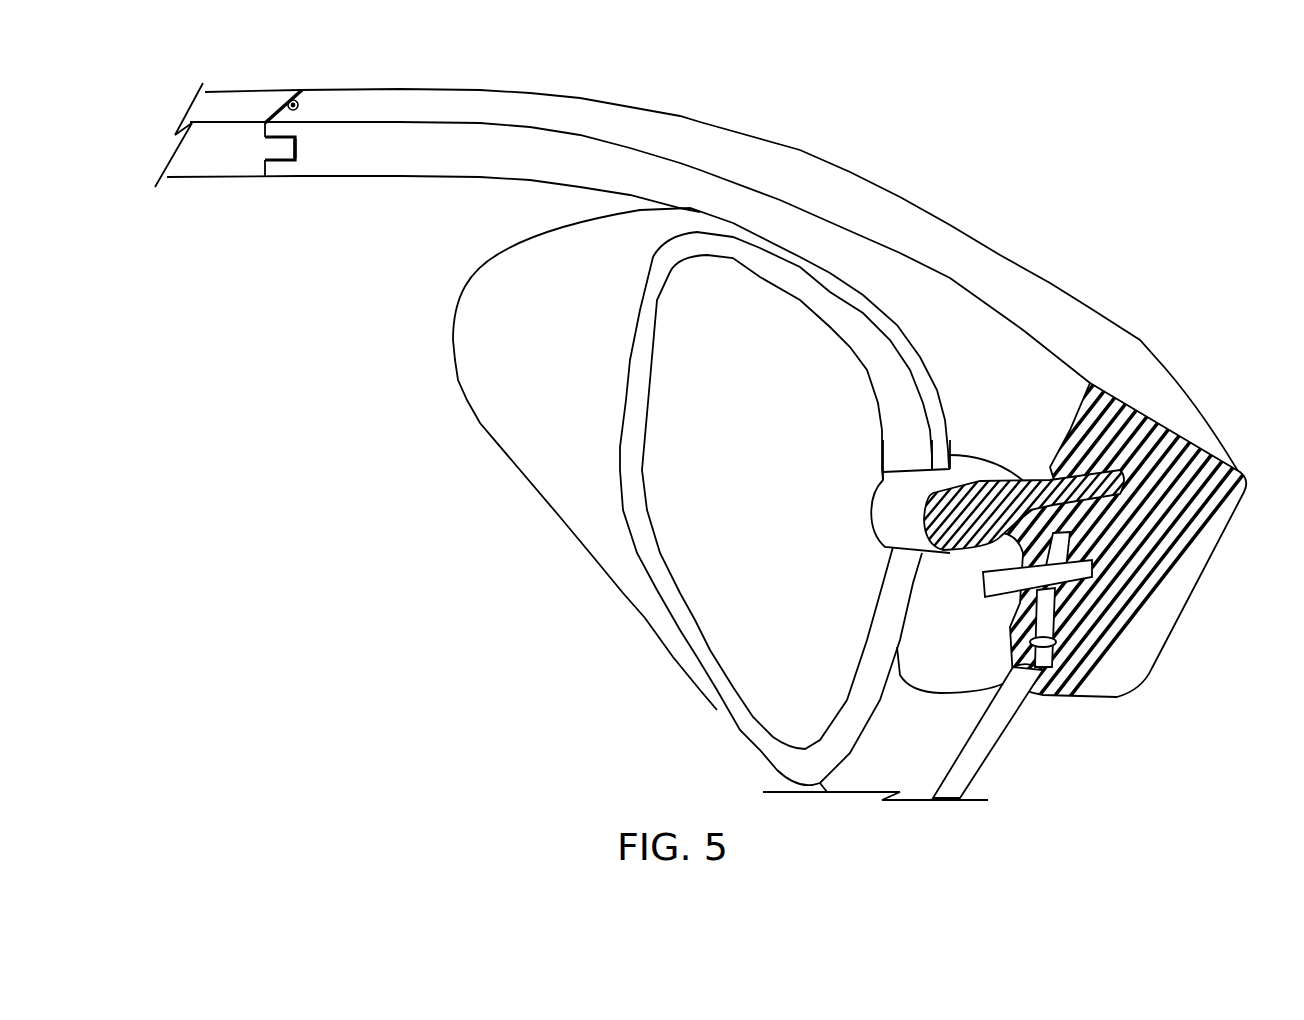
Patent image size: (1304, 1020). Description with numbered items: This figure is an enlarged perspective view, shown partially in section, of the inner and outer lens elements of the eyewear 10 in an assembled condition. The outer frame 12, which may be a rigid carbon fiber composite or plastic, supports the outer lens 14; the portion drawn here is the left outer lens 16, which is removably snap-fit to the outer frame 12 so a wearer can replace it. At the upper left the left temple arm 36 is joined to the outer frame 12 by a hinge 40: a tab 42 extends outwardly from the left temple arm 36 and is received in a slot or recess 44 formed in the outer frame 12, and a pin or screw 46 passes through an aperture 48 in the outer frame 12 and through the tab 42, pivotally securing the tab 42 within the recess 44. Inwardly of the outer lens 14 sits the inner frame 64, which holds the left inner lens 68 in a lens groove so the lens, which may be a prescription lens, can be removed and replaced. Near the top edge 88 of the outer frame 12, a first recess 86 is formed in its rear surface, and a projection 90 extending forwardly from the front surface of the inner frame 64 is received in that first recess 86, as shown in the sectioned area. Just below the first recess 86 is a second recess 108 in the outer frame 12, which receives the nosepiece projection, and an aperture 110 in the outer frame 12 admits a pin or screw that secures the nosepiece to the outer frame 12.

The eyewear 10 is at (407, 518).
The outer frame 12 is at (892, 211).
The outer lens 14 is at (478, 422).
The left outer lens 16 is at (544, 339).
The left temple arm 36 is at (200, 168).
The hinge 40 is at (292, 153).
The tab 42 is at (277, 150).
The recess 44 is at (297, 146).
The screw 46 is at (295, 101).
The aperture 48 is at (302, 103).
The inner frame 64 is at (822, 307).
The left inner lens 68 is at (753, 479).
The first recess 86 is at (1043, 480).
The top edge 88 is at (1023, 330).
The projection 90 is at (1077, 477).
The second recess 108 is at (1003, 594).
The aperture 110 is at (1033, 636).